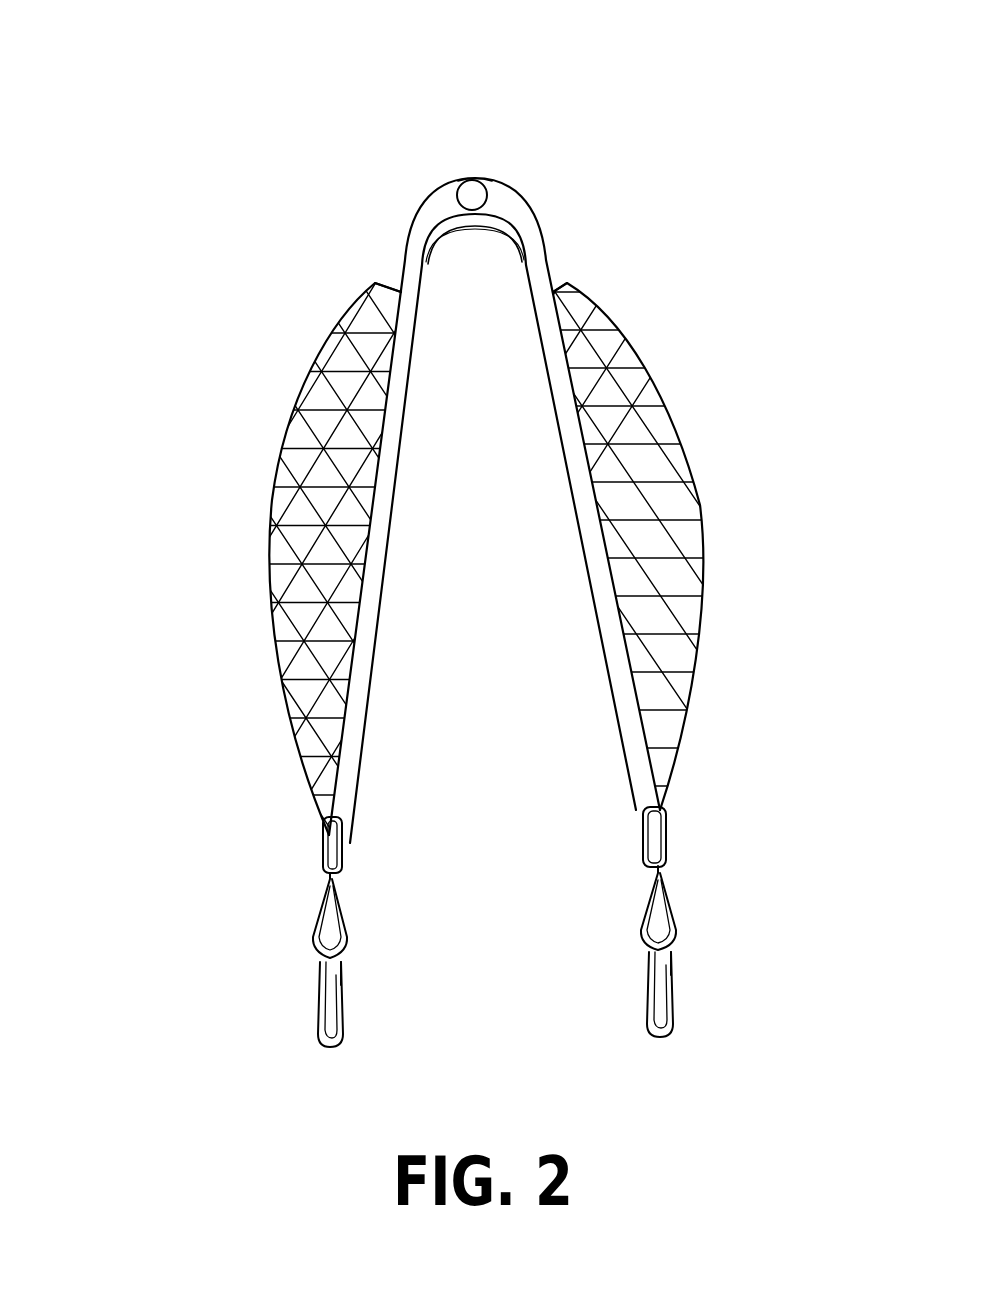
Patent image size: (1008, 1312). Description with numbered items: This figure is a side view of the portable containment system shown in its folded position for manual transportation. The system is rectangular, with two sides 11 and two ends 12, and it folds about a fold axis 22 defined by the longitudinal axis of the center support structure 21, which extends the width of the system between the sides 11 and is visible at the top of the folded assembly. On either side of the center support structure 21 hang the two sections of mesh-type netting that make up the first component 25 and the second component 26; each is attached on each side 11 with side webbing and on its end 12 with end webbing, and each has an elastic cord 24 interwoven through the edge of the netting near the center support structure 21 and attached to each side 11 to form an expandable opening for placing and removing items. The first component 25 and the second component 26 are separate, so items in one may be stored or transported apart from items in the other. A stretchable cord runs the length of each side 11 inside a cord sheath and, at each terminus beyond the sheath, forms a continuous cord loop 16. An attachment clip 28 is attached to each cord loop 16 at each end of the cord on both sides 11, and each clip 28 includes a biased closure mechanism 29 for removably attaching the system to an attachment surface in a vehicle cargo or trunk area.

The side 11 is at (494, 510).
The end 12 is at (494, 903).
The cord loop 16 is at (313, 920).
The center support structure 21 is at (476, 205).
The fold axis 22 is at (467, 176).
The elastic cord 24 is at (375, 283).
The first component 25 is at (273, 509).
The second component 26 is at (703, 547).
The attachment clip 28 is at (315, 1020).
The biased closure mechanism 29 is at (343, 987).